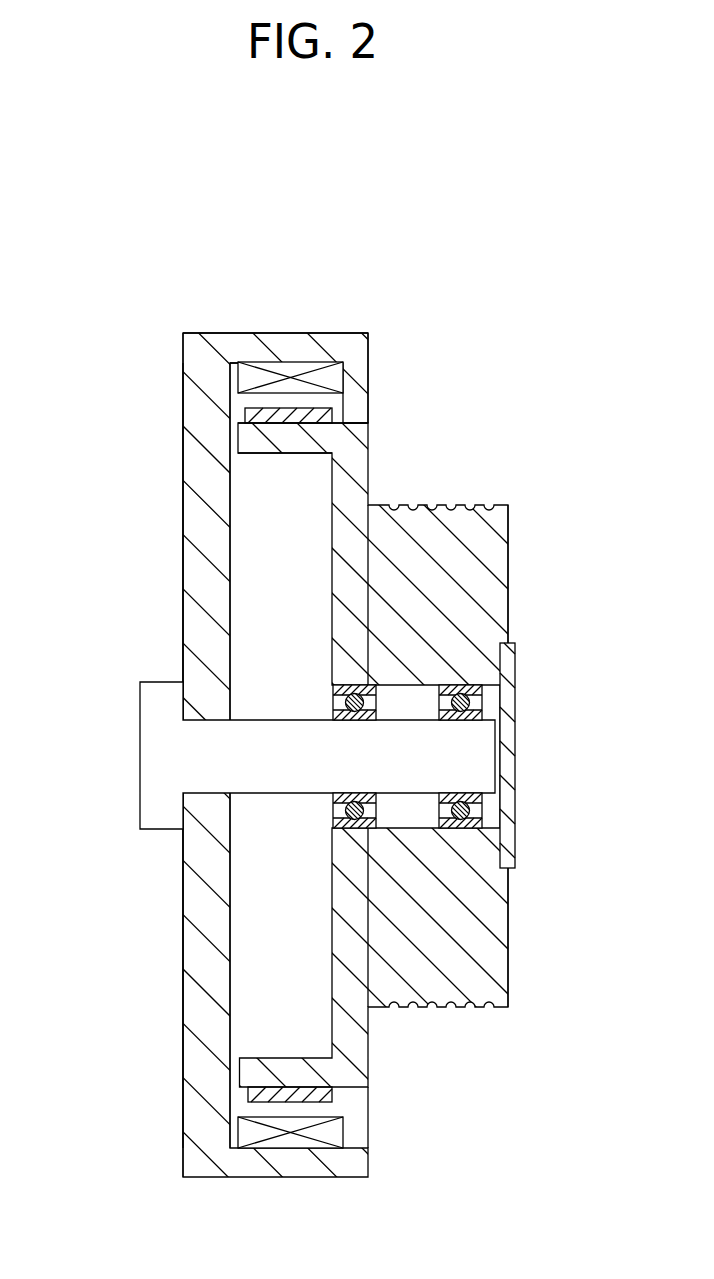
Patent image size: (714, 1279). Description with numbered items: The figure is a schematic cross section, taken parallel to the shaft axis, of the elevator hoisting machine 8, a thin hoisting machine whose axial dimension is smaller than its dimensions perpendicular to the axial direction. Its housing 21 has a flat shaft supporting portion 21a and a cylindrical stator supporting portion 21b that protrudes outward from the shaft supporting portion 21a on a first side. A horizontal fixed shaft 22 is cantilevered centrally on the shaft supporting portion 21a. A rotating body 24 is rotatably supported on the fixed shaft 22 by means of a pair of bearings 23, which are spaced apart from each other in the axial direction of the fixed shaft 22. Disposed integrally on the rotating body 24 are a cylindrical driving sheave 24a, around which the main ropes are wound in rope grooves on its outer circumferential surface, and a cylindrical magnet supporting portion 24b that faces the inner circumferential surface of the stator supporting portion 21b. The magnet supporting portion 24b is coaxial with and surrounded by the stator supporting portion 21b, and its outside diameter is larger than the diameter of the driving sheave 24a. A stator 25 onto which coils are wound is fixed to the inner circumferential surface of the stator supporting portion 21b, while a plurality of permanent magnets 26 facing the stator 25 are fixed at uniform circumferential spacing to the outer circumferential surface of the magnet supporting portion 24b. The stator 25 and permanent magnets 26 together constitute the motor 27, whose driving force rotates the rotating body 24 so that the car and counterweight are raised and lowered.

The elevator hoisting machine 8 is at (398, 318).
The housing 21 is at (202, 423).
The shaft supporting portion 21a is at (203, 571).
The stator supporting portion 21b is at (340, 345).
The fixed shaft 22 is at (162, 723).
The bearings 23 is at (483, 694).
The rotating body 24 is at (343, 455).
The driving sheave 24a is at (470, 548).
The magnet supporting portion 24b is at (288, 445).
The stator 25 is at (332, 381).
The permanent magnets 26 is at (258, 405).
The motor 27 is at (230, 376).